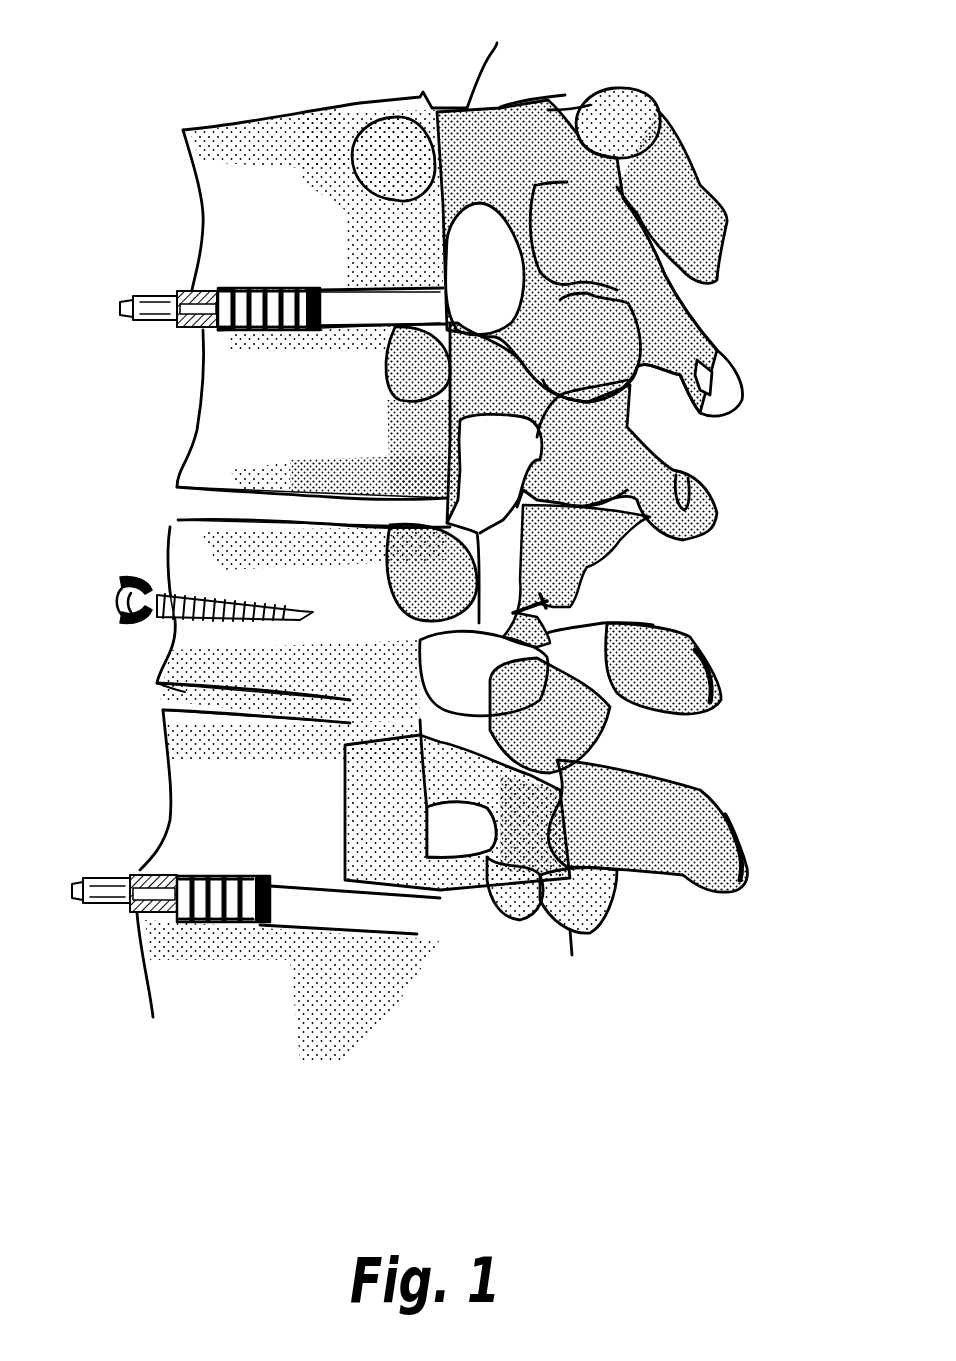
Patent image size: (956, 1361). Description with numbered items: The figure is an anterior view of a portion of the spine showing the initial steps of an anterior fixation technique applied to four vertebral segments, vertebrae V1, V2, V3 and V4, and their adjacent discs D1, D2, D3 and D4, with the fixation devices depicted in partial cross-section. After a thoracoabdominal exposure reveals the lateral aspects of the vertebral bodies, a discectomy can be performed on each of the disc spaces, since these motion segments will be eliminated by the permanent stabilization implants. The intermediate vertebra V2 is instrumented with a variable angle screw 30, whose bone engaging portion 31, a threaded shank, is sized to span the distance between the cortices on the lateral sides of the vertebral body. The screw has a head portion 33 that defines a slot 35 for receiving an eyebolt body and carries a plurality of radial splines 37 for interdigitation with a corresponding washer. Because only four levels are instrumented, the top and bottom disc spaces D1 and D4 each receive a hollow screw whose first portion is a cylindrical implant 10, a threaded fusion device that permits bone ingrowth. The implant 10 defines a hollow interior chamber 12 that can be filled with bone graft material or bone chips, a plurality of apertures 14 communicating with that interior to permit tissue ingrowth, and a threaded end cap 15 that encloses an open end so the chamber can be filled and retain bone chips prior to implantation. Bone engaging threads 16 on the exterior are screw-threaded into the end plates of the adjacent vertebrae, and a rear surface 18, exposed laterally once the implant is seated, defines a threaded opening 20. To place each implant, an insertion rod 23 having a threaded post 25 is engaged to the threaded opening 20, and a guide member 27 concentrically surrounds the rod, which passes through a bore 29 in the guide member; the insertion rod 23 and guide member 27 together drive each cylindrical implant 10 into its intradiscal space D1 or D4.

The cylindrical implant 10 is at (310, 285).
The hollow interior chamber 12 is at (272, 285).
The apertures 14 is at (201, 186).
The threaded end cap 15 is at (331, 285).
The bone engaging threads 16 is at (230, 337).
The rear surface 18 is at (243, 287).
The threaded opening 20 is at (200, 331).
The insertion rod 23 is at (135, 300).
The threaded post 25 is at (223, 290).
The guide member 27 is at (193, 292).
The bore 29 is at (159, 299).
The variable angle screw 30 is at (145, 628).
The bone engaging portion 31 is at (167, 690).
The head portion 33 is at (120, 580).
The slot 35 is at (127, 597).
The radial splines 37 is at (140, 580).
The disc D1 is at (420, 308).
The disc D2 is at (378, 512).
The disc D3 is at (357, 708).
The disc D4 is at (447, 900).
The vertebra V1 is at (310, 397).
The vertebra V2 is at (353, 607).
The vertebra V3 is at (357, 790).
The vertebra V4 is at (247, 958).